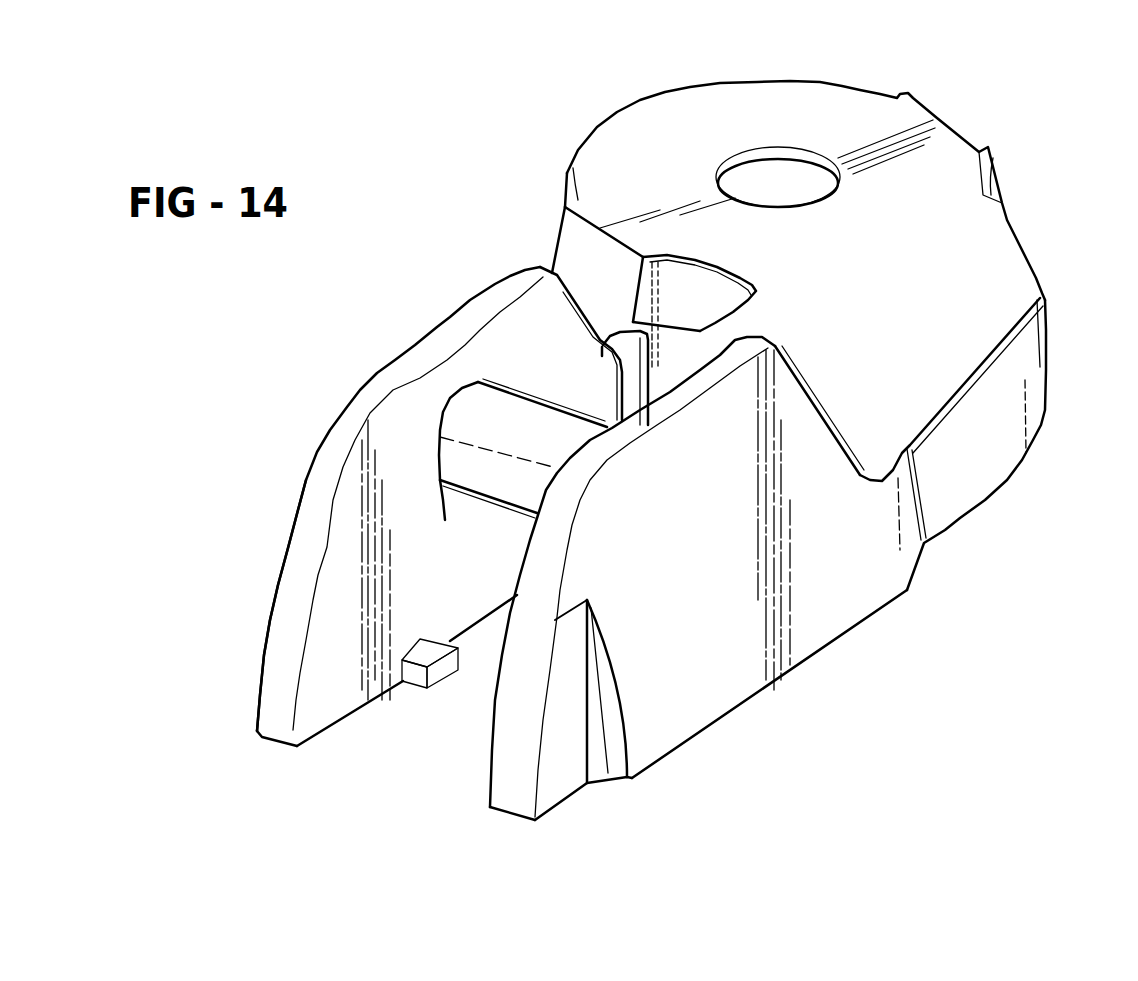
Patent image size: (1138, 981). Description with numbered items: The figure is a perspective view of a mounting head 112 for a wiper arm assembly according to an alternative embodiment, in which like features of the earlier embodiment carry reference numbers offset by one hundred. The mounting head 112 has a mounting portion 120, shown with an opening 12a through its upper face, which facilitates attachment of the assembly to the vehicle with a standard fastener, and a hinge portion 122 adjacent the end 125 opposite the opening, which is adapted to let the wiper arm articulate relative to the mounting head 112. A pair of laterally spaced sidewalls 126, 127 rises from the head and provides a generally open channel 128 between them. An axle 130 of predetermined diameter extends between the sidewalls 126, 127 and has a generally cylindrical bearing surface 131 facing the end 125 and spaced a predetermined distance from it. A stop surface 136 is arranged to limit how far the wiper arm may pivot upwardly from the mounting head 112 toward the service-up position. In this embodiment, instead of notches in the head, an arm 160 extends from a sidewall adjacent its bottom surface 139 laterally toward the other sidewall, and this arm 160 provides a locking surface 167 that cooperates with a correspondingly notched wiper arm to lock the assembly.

The opening 12a is at (768, 153).
The mounting head 112 is at (1010, 480).
The mounting portion 120 is at (993, 260).
The hinge portion 122 is at (362, 390).
The end 125 is at (270, 695).
The sidewall 126 is at (823, 620).
The sidewall 127 is at (267, 627).
The channel 128 is at (385, 787).
The axle 130 is at (483, 417).
The bearing surface 131 is at (455, 475).
The stop surface 136 is at (660, 327).
The bottom surface 139 is at (317, 740).
The arm 160 is at (440, 680).
The locking surface 167 is at (417, 670).